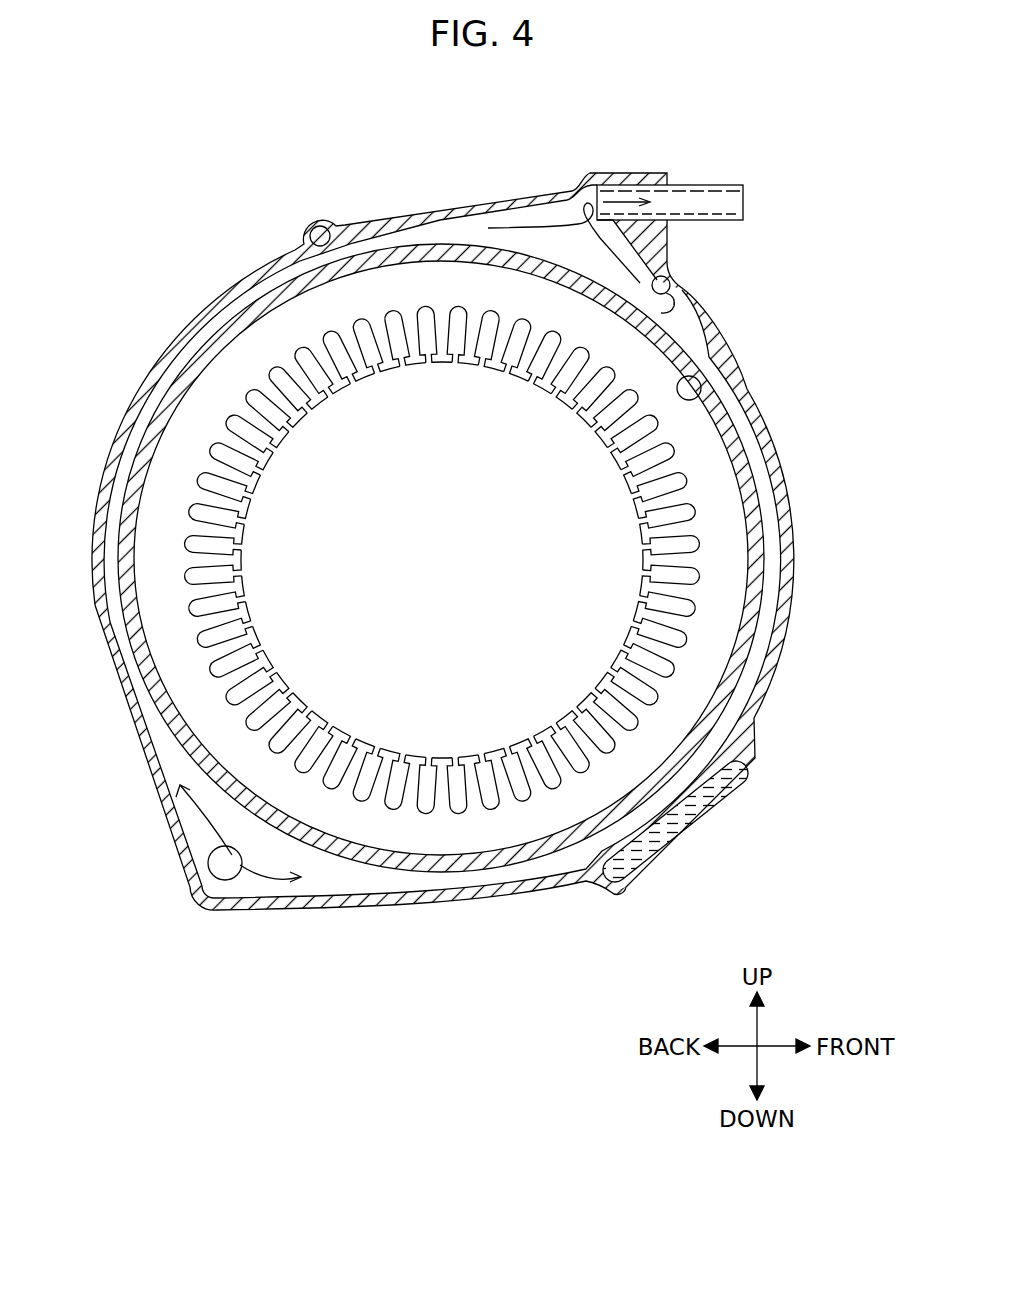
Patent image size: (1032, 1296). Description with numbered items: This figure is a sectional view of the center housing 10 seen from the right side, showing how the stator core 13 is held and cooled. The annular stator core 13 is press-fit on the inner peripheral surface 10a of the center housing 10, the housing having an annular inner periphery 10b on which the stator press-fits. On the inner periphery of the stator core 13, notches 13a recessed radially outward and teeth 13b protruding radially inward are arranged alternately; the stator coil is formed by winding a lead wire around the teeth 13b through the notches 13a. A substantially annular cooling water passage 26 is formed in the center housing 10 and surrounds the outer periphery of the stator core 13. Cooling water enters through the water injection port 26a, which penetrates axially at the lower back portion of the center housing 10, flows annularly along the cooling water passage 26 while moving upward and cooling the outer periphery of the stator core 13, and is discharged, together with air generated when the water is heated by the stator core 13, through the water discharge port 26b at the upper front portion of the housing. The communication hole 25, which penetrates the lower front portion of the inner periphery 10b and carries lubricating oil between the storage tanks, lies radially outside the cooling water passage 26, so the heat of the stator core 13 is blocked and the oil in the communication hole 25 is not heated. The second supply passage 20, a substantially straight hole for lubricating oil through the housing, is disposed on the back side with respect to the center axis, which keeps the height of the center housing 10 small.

The center housing 10 is at (710, 328).
The inner peripheral surface 10a is at (701, 381).
The inner periphery 10b is at (673, 279).
The stator core 13 is at (205, 397).
The notches 13a is at (488, 808).
The teeth 13b is at (474, 762).
The second supply passage 20 is at (313, 230).
The communication hole 25 is at (687, 822).
The cooling water passage 26 is at (473, 227).
The water injection port 26a is at (213, 872).
The water discharge port 26b is at (712, 185).